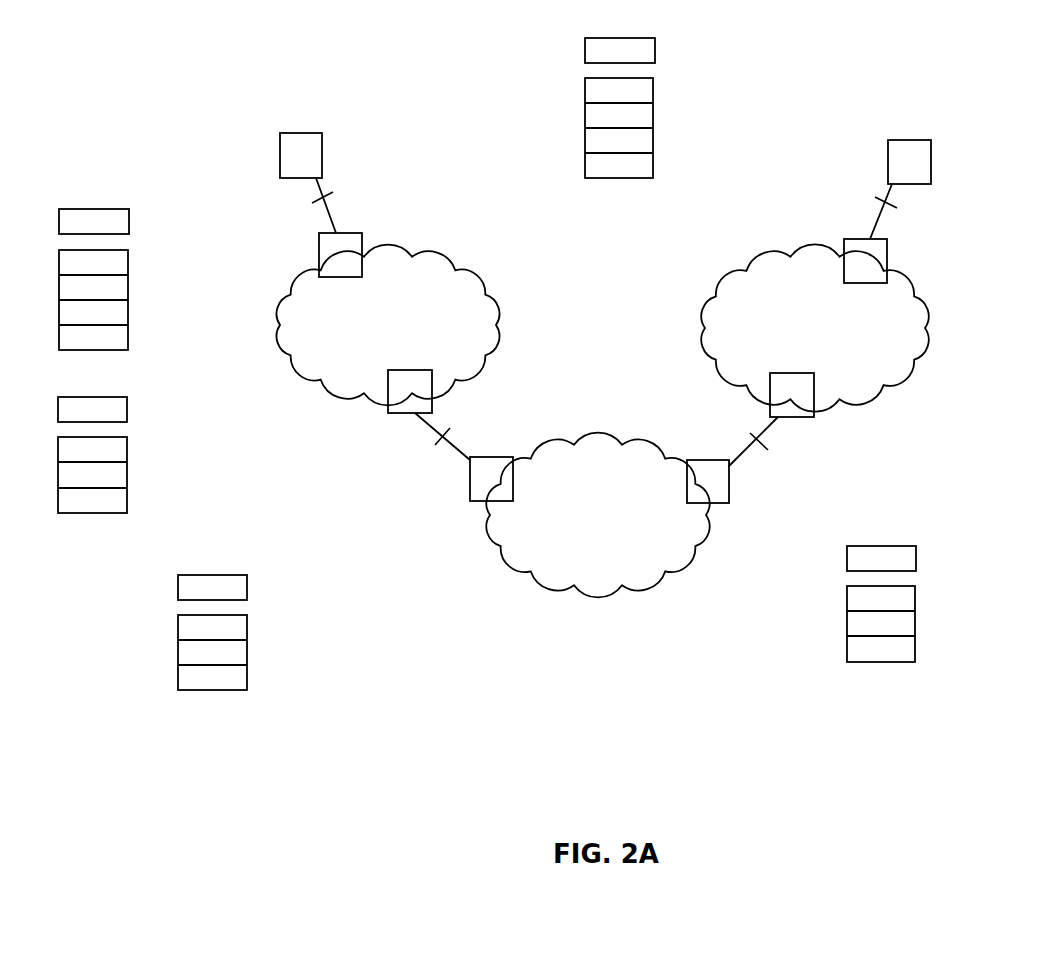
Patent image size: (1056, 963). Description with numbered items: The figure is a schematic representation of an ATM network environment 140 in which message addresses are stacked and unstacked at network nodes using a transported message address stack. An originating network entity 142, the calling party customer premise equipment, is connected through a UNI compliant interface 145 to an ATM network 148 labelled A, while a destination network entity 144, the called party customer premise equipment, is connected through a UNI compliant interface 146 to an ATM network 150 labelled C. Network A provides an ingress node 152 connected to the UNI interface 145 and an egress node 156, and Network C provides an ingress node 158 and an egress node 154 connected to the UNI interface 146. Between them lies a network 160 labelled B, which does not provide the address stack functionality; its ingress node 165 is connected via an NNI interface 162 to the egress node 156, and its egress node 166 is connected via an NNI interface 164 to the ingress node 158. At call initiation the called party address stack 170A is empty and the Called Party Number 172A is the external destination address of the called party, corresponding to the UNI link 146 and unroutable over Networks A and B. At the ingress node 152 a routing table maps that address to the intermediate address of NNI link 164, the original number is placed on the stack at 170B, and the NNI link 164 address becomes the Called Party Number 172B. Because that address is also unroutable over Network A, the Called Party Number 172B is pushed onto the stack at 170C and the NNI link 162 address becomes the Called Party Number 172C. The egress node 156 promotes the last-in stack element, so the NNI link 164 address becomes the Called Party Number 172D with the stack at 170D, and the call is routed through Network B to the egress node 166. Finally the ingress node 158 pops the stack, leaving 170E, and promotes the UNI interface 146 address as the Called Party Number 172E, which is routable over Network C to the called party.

The ATM network environment 140 is at (445, 663).
The originating network entity 142 is at (283, 156).
The destination network entity 144 is at (930, 162).
The UNI compliant interface 145 is at (331, 193).
The UNI compliant interface 146 is at (878, 200).
The ATM network 148 is at (460, 300).
The ATM network 150 is at (740, 303).
The ingress node 152 is at (331, 250).
The egress node 154 is at (875, 257).
The egress node 156 is at (420, 406).
The ingress node 158 is at (805, 412).
The network 160 is at (541, 548).
The NNI interface 162 is at (433, 447).
The NNI interface 164 is at (762, 450).
The ingress node 165 is at (500, 468).
The egress node 166 is at (717, 504).
The called party address stack 170A is at (653, 163).
The called party address stack 170B is at (128, 313).
The called party address stack 170C is at (127, 500).
The called party address stack 170D is at (247, 678).
The called party address stack 170E is at (915, 643).
The Called Party Number 172A is at (655, 42).
The Called Party Number 172B is at (129, 216).
The Called Party Number 172C is at (127, 404).
The Called Party Number 172D is at (247, 580).
The Called Party Number 172E is at (916, 547).